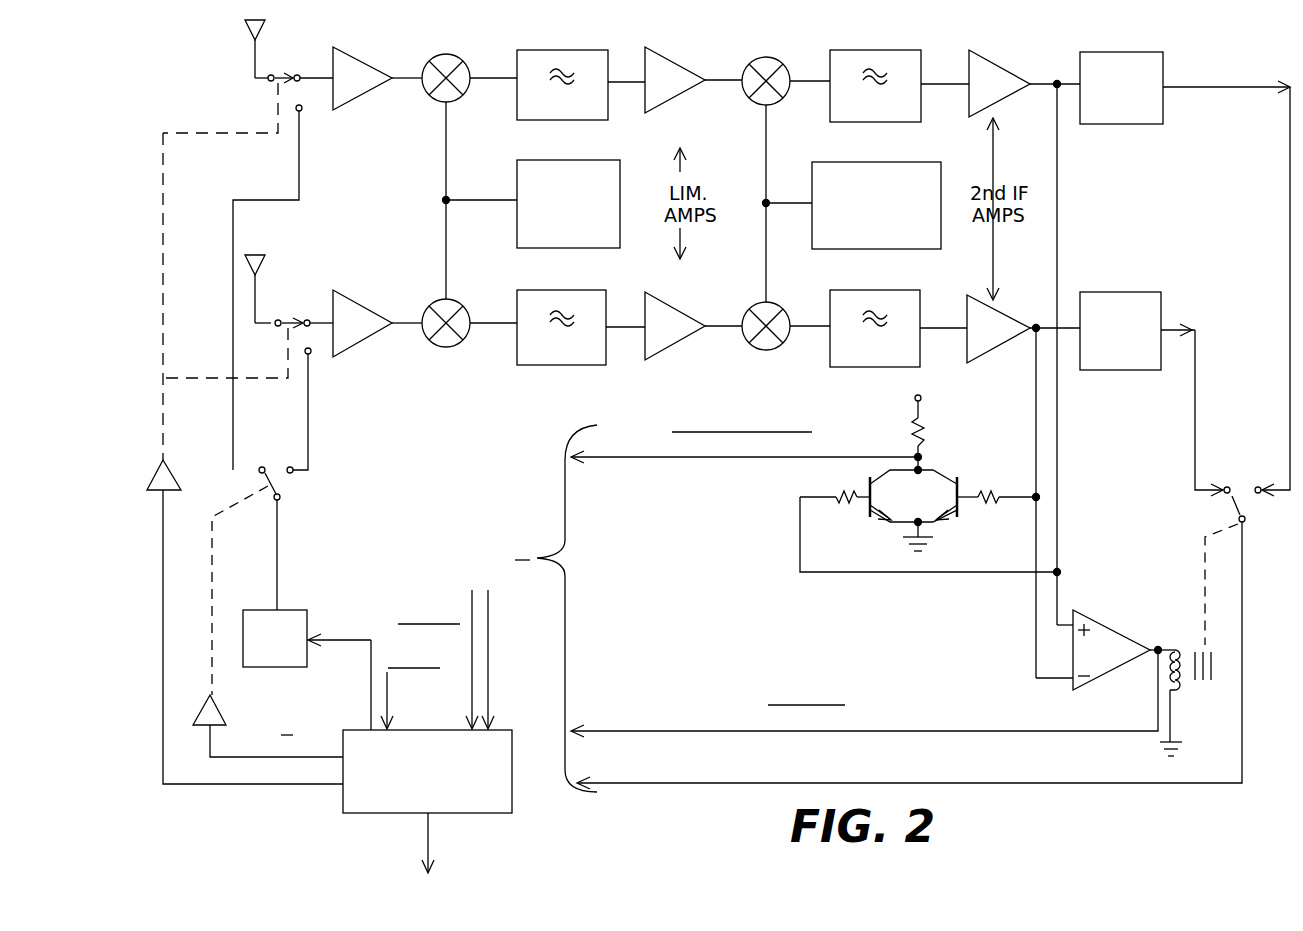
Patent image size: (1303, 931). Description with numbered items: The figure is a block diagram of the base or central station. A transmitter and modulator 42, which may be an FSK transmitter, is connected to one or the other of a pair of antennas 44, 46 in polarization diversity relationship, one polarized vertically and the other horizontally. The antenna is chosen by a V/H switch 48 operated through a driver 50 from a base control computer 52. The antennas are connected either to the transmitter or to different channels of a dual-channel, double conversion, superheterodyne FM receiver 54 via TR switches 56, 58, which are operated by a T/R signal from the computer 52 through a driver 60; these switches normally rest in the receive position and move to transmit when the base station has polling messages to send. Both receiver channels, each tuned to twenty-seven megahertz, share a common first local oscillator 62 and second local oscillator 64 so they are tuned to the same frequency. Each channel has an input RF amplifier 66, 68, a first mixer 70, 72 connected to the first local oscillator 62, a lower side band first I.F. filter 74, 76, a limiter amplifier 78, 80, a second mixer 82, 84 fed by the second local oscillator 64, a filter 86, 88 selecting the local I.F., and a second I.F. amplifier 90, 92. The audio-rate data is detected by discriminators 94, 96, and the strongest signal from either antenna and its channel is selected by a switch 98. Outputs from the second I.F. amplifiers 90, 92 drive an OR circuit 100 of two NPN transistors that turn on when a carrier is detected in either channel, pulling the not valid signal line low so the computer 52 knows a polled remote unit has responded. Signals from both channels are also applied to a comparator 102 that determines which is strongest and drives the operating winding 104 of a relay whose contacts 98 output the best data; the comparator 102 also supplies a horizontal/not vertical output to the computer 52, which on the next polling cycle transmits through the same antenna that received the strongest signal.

The transmitter and modulator 42 is at (300, 668).
The antenna 44 is at (246, 25).
The antenna 46 is at (250, 254).
The V/H switch 48 is at (274, 477).
The driver 50 is at (216, 709).
The base control computer 52 is at (512, 784).
The receiver 54 is at (980, 39).
The TR switch 56 is at (273, 86).
The TR switch 58 is at (287, 331).
The driver 60 is at (151, 474).
The first local oscillator 62 is at (614, 249).
The second local oscillator 64 is at (935, 250).
The input RF amplifier 66 is at (353, 96).
The input RF amplifier 68 is at (356, 341).
The first mixer 70 is at (461, 93).
The first mixer 72 is at (465, 338).
The first I.F. filter 74 is at (600, 121).
The first I.F. filter 76 is at (598, 366).
The limiter amplifier 78 is at (675, 98).
The limiter amplifier 80 is at (667, 343).
The second mixer 82 is at (780, 100).
The second mixer 84 is at (783, 343).
The filter 86 is at (913, 123).
The filter 88 is at (921, 367).
The second I.F. amplifier 90 is at (999, 100).
The second I.F. amplifier 92 is at (993, 345).
The discriminator 94 is at (1155, 125).
The discriminator 96 is at (1145, 371).
The switch 98 is at (1233, 499).
The OR circuit 100 is at (948, 473).
The comparator 102 is at (1090, 681).
The operating winding 104 is at (1177, 688).